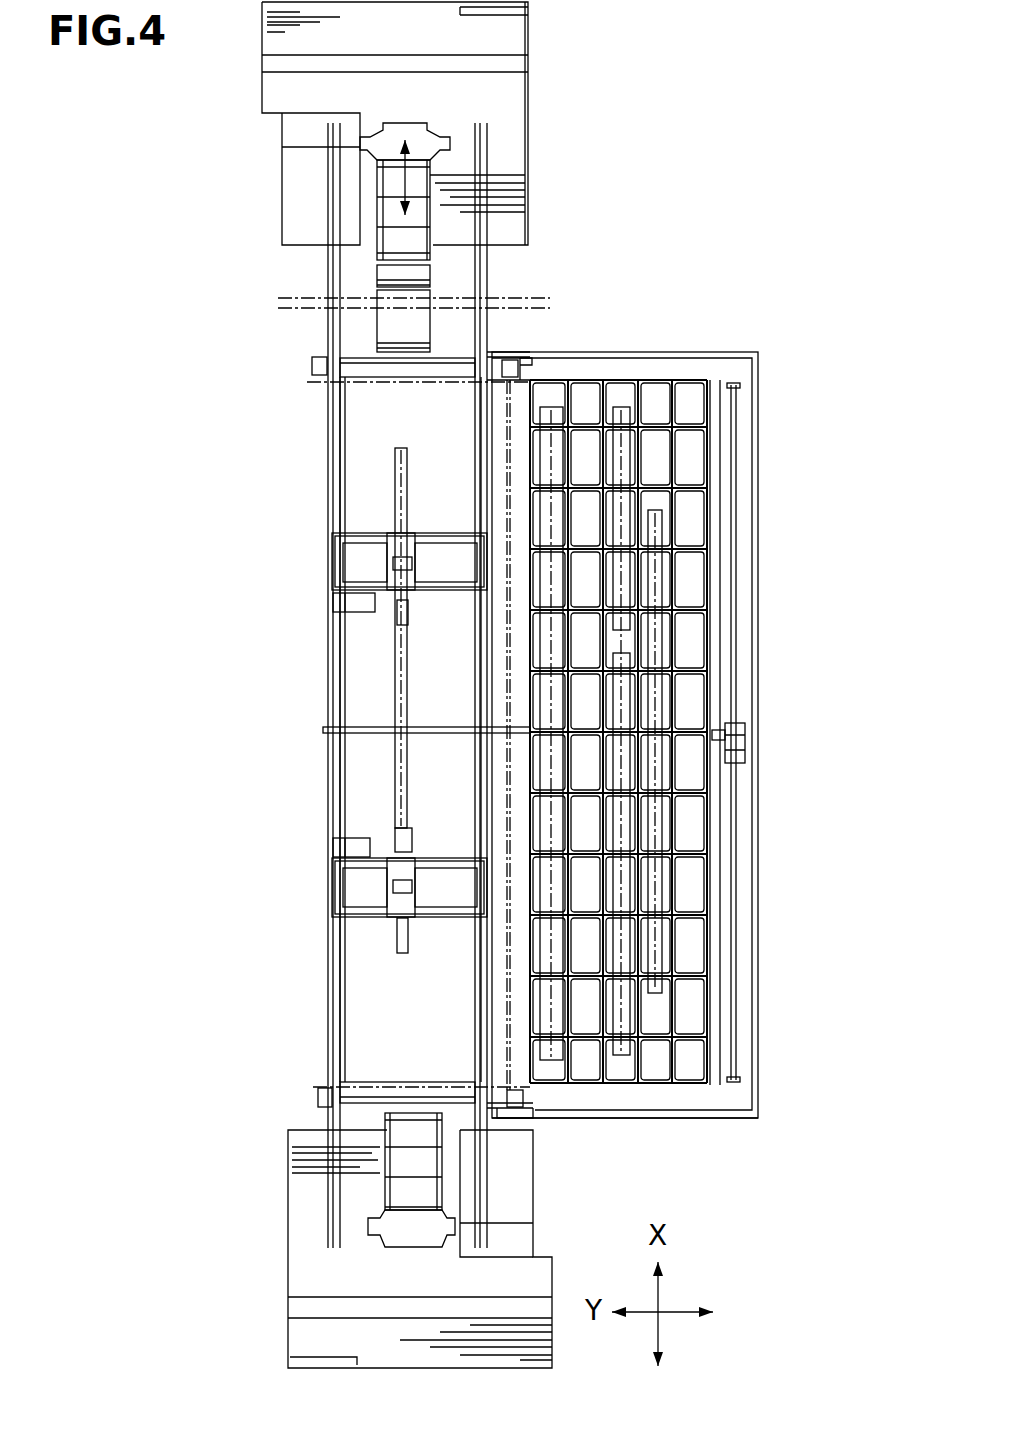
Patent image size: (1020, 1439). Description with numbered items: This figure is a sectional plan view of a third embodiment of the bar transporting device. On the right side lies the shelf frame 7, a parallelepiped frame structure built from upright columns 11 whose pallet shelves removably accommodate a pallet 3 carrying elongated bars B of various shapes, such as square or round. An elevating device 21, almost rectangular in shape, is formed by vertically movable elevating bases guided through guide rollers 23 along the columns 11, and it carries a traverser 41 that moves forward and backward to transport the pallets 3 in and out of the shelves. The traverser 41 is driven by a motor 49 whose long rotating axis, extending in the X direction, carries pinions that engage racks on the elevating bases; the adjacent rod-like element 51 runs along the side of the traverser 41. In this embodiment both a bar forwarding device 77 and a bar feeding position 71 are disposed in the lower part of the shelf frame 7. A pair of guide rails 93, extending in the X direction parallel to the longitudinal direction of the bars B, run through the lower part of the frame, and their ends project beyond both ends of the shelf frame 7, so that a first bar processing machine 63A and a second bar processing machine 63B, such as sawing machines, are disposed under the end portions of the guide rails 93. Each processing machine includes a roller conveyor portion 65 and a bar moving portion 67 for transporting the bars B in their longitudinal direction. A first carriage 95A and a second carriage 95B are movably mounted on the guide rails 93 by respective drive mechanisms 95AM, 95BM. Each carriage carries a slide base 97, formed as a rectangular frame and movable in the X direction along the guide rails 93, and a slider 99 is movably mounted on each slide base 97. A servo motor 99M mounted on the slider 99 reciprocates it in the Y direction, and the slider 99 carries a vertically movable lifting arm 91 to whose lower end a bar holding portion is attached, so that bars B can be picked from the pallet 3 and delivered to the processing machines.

The pallet 3 is at (718, 576).
The shelf frame 7 is at (352, 350).
The upright columns 11 is at (312, 366).
The elevating device 21 is at (706, 1133).
The guide rollers 23 is at (525, 360).
The traverser 41 is at (762, 823).
The motor 49 is at (745, 747).
The feed rod 51 is at (738, 870).
The first bar processing machine 63A is at (513, 168).
The second bar processing machine 63B is at (305, 1187).
The roller conveyor portion 65 is at (450, 284).
The bar moving portion 67 is at (362, 252).
The bar feeding position 71 is at (430, 1005).
The bar forwarding device 77 is at (318, 949).
The lifting arm 91 is at (408, 597).
The guide rails 93 is at (337, 772).
The first carriage 95A is at (320, 562).
The drive mechanism 95AM is at (355, 610).
The second carriage 95B is at (320, 889).
The drive mechanism 95BM is at (362, 838).
The slide base 97 is at (362, 532).
The slider 99 is at (416, 548).
The servo motor 99M is at (395, 616).
The bars B is at (618, 405).